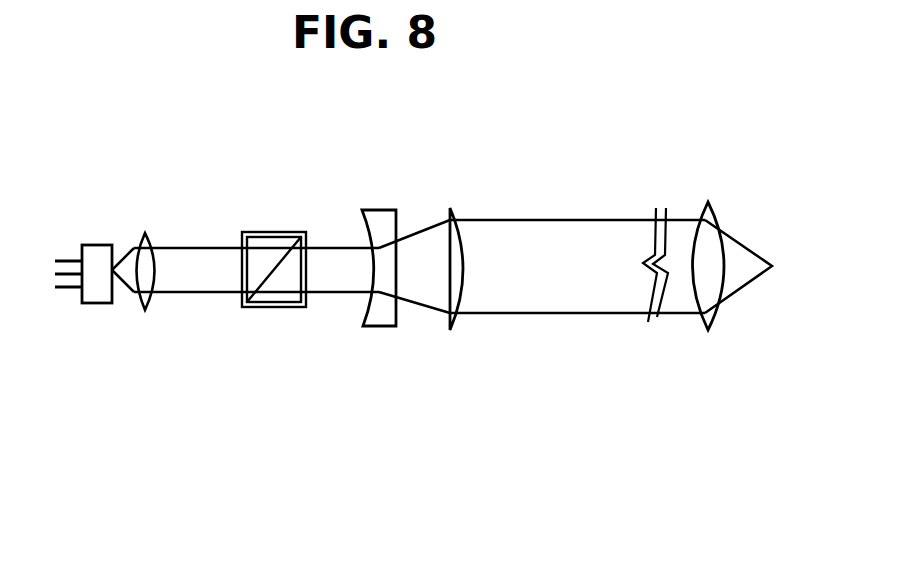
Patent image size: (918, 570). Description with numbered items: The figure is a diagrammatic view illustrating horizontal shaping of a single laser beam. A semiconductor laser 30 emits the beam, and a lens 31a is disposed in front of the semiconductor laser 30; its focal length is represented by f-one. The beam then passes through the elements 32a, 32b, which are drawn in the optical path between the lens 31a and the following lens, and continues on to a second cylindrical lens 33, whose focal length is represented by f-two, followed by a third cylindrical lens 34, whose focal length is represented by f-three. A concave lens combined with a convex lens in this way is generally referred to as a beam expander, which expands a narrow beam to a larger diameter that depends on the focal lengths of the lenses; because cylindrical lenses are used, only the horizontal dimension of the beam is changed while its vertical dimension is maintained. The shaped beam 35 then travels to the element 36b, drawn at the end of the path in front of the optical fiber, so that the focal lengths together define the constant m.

The semiconductor laser 30 is at (98, 303).
The lens 31a is at (142, 233).
The beam splitter 32a is at (247, 232).
The beam splitter 32b is at (274, 269).
The second cylindrical lens 33 is at (380, 210).
The third cylindrical lens 34 is at (450, 212).
The collimated light beam 35 is at (618, 220).
The objective lens 36b is at (720, 218).